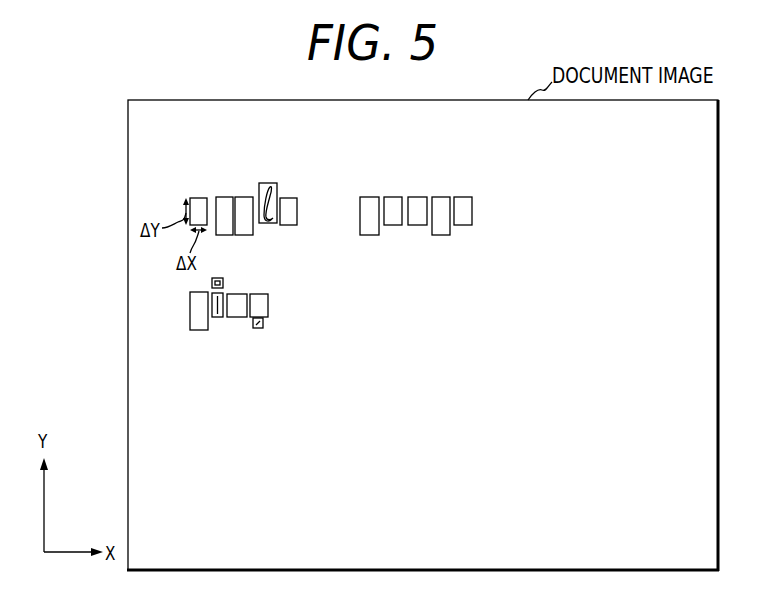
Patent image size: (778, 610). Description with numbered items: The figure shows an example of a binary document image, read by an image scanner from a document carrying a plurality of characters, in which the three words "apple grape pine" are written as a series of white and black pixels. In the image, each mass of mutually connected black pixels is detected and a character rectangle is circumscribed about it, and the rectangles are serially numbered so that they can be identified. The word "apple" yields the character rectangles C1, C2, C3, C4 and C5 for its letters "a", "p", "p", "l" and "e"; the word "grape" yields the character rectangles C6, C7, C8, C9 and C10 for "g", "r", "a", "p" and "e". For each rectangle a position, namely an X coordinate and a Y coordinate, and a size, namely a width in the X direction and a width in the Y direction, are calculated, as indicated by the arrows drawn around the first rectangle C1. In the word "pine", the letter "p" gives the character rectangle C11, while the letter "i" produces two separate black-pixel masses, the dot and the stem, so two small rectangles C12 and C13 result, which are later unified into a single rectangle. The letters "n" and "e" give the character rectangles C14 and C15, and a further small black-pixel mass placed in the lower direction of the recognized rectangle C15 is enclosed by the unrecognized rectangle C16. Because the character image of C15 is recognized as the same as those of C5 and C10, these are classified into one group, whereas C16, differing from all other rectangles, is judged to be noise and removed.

The character rectangle C1 is at (191, 195).
The character rectangle C2 is at (217, 189).
The character rectangle C3 is at (249, 194).
The character rectangle C4 is at (275, 180).
The character rectangle C5 is at (297, 198).
The character rectangle C6 is at (361, 194).
The character rectangle C7 is at (387, 189).
The character rectangle C8 is at (422, 194).
The character rectangle C9 is at (449, 189).
The character rectangle C10 is at (487, 201).
The character rectangle C11 is at (182, 322).
The character rectangle C12 is at (234, 263).
The character rectangle C13 is at (232, 325).
The character rectangle C14 is at (256, 292).
The character rectangle C15 is at (287, 303).
The character rectangle C16 is at (280, 343).